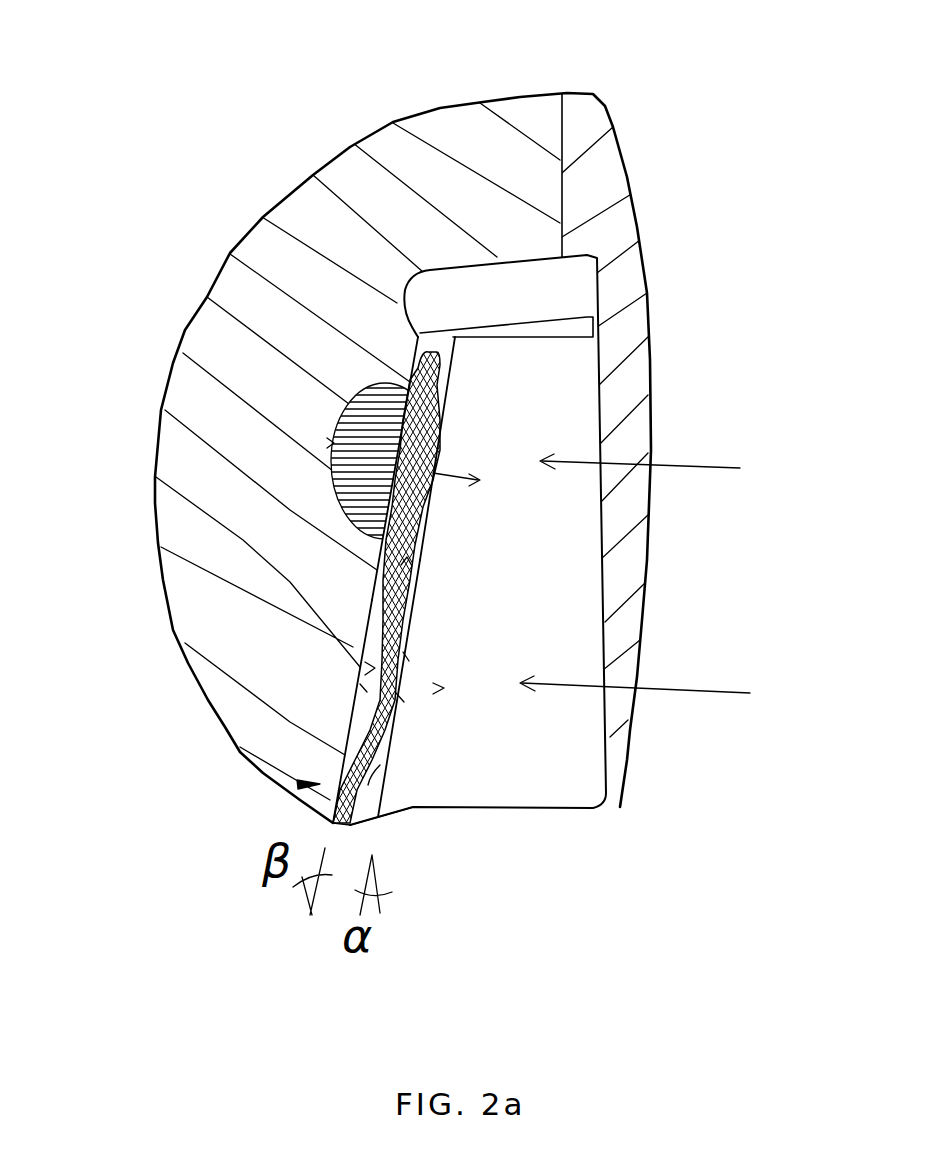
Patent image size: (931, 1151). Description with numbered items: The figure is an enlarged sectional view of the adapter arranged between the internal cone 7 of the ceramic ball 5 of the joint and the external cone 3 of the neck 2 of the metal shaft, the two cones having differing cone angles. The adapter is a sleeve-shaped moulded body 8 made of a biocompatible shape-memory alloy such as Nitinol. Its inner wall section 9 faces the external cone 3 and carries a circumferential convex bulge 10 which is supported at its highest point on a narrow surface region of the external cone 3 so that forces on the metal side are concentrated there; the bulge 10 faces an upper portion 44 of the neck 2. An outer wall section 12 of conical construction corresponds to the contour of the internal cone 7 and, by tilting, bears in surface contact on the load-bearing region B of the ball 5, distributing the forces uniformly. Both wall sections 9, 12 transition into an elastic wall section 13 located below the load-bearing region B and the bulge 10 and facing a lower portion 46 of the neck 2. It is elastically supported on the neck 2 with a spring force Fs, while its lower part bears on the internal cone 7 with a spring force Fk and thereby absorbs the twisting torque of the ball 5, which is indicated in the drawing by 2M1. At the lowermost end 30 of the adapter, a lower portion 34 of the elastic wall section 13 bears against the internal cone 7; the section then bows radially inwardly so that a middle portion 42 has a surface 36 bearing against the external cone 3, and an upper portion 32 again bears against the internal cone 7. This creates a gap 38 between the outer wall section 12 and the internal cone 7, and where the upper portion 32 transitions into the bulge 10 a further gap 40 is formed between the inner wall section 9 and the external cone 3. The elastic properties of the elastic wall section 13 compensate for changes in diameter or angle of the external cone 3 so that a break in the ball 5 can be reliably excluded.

The ball of the joint 5 is at (391, 106).
The neck 2 is at (565, 413).
The outer wall section 12 is at (383, 483).
The circumferential convex bulge 10 is at (437, 450).
The inner wall section 9 is at (443, 425).
The gap 40 is at (420, 587).
The upper portion of the elastic wall section 32 is at (375, 567).
The internal cone 7 is at (343, 737).
The moulded body 8 is at (407, 560).
The elastic wall section 13 is at (403, 657).
The surface 36 is at (400, 697).
The lower portion of the elastic wall section 34 is at (380, 765).
The middle portion of the elastic wall section 42 is at (375, 667).
The gap 38 is at (365, 690).
The lowermost end 30 is at (330, 812).
The external cone 3 is at (393, 807).
The upper portion of the neck 44 is at (662, 471).
The lower portion of the neck 46 is at (660, 694).
The reference direction 2M1 is at (481, 483).
The load-bearing region B is at (330, 443).
The spring force Fs is at (397, 683).
The spring force Fk is at (330, 808).